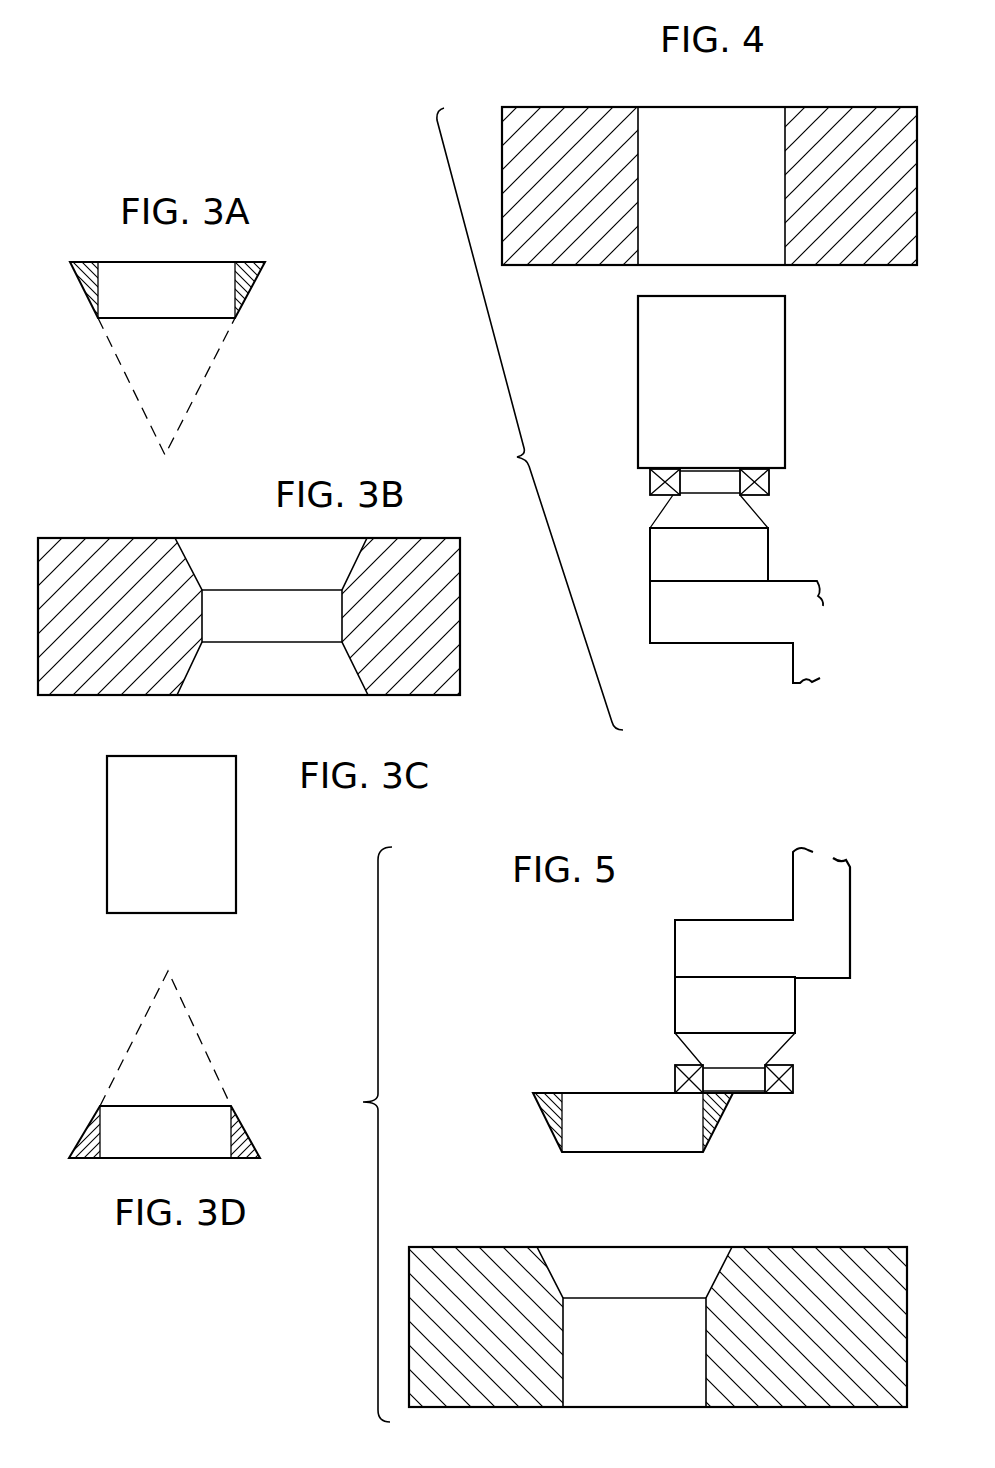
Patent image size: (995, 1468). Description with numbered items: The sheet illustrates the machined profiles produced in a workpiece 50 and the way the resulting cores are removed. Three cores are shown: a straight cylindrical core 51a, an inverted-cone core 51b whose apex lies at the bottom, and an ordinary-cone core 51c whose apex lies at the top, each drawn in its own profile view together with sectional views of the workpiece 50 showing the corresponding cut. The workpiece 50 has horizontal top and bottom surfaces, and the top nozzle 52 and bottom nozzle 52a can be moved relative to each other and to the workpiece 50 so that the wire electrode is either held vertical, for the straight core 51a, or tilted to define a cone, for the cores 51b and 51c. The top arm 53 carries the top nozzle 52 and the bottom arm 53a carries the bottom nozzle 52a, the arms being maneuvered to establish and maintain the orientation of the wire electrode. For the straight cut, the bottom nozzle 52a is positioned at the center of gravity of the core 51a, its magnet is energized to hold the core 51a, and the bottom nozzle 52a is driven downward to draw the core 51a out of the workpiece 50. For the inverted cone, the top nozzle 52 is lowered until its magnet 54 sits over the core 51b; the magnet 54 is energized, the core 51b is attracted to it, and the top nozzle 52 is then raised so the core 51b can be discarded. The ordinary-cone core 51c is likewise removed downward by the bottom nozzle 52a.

In FIG. 3B, the workpiece 50 is at (460, 558).
In FIG. 4, the workpiece 50 is at (865, 265).
In FIG. 5, the workpiece 50 is at (842, 1247).
In FIG. 3C, the core 51a is at (236, 862).
In FIG. 4, the core 51a is at (785, 383).
In FIG. 3A, the core 51b is at (258, 290).
In FIG. 5, the core 51b is at (546, 1126).
In FIG. 3D, the core 51c is at (256, 1141).
In FIG. 5, the top nozzle 52 is at (795, 1012).
In FIG. 4, the bottom nozzle 52a is at (648, 568).
In FIG. 5, the top arm 53 is at (850, 950).
In FIG. 4, the bottom arm 53a is at (700, 645).
In FIG. 4, the magnet 54 is at (648, 484).
In FIG. 5, the magnet 54 is at (793, 1078).